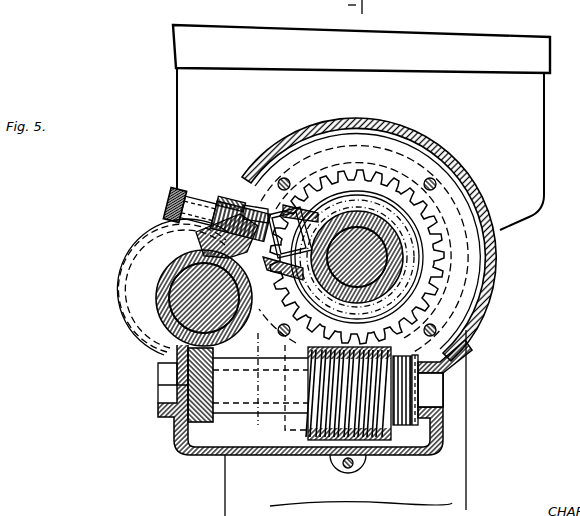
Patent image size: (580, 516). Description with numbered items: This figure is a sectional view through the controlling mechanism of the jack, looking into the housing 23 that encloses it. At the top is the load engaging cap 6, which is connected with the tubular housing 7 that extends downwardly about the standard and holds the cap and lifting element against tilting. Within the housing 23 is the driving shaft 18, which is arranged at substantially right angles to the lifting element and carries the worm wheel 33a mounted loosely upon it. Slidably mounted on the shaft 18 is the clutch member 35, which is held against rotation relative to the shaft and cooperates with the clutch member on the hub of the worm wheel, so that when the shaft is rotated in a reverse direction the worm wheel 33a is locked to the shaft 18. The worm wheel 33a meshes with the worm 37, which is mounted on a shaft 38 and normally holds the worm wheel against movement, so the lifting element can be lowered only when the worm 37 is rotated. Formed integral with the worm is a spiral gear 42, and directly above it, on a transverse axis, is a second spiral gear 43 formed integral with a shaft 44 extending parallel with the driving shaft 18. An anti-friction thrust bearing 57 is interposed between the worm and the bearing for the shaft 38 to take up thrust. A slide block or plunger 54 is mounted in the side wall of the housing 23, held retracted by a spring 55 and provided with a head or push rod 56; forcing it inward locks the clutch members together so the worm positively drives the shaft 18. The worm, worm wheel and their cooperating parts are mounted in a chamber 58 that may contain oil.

The load engaging device or cap 6 is at (552, 62).
The tubular housing 7 is at (541, 128).
The housing 23 is at (372, 121).
The worm wheel 33a is at (357, 174).
The shaft 18 is at (380, 250).
The worm 37 is at (446, 256).
The clutch member 35 is at (388, 281).
The slide block or plunger 54 is at (280, 216).
The spring 55 is at (220, 197).
The head or push rod 56 is at (173, 206).
The shaft 44 is at (188, 291).
The second spiral gear 43 is at (177, 363).
The spiral gear 42 is at (205, 420).
The chamber 58 is at (238, 432).
The shaft 38 is at (433, 388).
The anti-friction thrust bearing 57 is at (403, 412).